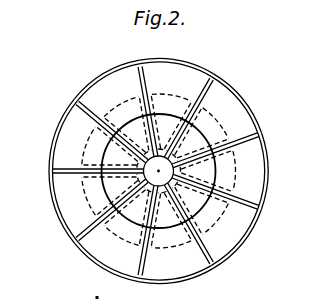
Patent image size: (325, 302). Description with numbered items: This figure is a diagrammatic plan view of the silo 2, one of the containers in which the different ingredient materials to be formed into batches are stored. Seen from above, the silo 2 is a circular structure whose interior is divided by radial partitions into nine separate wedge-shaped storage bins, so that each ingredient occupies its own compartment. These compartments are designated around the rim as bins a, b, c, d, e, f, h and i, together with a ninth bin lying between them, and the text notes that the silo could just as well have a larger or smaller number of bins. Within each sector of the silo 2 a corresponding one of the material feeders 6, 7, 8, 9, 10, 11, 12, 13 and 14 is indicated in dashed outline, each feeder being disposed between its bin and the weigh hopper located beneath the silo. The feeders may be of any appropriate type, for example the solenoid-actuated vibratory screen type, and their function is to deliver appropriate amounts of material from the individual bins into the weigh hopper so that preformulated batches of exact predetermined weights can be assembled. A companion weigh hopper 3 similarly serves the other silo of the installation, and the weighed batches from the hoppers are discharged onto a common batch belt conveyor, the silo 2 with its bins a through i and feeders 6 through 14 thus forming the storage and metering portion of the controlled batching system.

The silo 2 is at (266, 138).
The weigh hopper 3 is at (233, 95).
The material feeder 6 is at (170, 243).
The material feeder 7 is at (120, 235).
The material feeder 8 is at (90, 200).
The material feeder 9 is at (91, 140).
The material feeder 10 is at (128, 100).
The material feeder 11 is at (175, 98).
The material feeder 12 is at (220, 128).
The material feeder 13 is at (232, 164).
The material feeder 14 is at (215, 220).
The bin a is at (175, 277).
The bin b is at (115, 267).
The bin c is at (60, 213).
The bin d is at (60, 132).
The bin e is at (103, 83).
The bin f is at (185, 71).
The bin h is at (263, 180).
The bin i is at (235, 243).